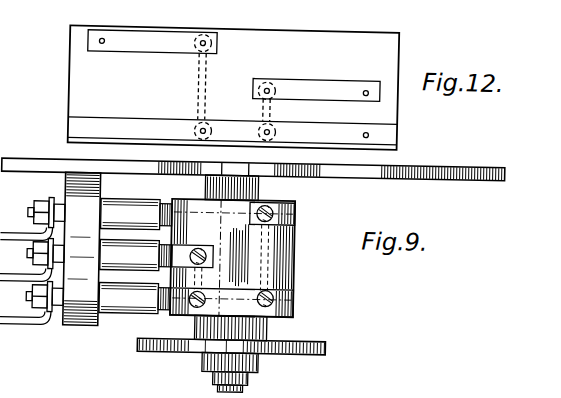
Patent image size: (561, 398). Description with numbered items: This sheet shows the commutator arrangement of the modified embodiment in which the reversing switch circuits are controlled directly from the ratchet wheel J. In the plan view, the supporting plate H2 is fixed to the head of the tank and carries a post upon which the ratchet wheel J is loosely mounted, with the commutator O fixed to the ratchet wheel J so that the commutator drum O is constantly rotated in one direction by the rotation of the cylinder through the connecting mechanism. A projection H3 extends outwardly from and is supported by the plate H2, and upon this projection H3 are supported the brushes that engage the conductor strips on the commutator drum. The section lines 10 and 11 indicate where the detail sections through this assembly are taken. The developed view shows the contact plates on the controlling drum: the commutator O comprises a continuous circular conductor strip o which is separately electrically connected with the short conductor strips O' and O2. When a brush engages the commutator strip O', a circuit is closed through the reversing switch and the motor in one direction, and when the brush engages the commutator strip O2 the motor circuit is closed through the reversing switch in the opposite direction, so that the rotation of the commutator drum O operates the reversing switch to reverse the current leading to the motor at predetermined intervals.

In FIG. 12, the commutator O is at (251, 87).
In FIG. 9, the commutator O is at (254, 246).
In FIG. 12, the short conductor strip O' is at (319, 82).
In FIG. 9, the short conductor strip O' is at (192, 232).
In FIG. 12, the short conductor strip O2 is at (134, 39).
In FIG. 9, the short conductor strip O2 is at (287, 201).
In FIG. 12, the continuous circular conductor strip o is at (384, 132).
In FIG. 9, the continuous circular conductor strip o is at (293, 286).
In FIG. 9, the section line 10 is at (301, 202).
In FIG. 9, the section line 11 is at (303, 298).
In FIG. 9, the supporting plate H2 is at (443, 163).
In FIG. 9, the projection H3 is at (69, 324).
In FIG. 9, the ratchet wheel J is at (327, 348).